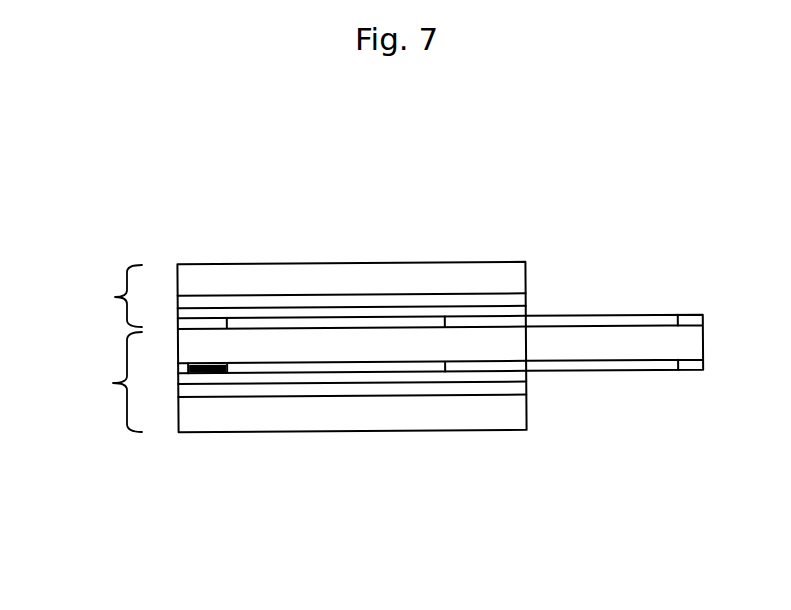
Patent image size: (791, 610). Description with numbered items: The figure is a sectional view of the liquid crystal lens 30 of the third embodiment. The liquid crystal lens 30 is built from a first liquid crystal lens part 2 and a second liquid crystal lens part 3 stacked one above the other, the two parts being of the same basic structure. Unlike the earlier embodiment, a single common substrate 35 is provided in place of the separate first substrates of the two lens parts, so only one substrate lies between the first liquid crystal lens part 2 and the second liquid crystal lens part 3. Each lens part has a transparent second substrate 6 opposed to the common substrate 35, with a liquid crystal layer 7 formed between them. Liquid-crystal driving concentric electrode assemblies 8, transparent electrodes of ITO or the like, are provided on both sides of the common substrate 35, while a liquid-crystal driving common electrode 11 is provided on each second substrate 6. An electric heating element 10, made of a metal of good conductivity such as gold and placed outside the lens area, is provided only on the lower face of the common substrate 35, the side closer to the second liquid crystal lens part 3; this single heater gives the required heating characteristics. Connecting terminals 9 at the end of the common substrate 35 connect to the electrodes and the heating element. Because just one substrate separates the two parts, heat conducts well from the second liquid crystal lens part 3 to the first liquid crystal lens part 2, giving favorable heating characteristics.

The first liquid crystal lens part 2 is at (113, 296).
The second liquid crystal lens part 3 is at (113, 382).
The second substrate 6 is at (481, 281).
The liquid crystal layer 7 is at (291, 312).
The liquid-crystal driving concentric electrode assembly 8 is at (385, 326).
The connecting terminal 9 is at (648, 322).
The electric heating element 10 is at (208, 368).
The liquid-crystal driving common electrode 11 is at (118, 472).
The liquid crystal lens 30 is at (561, 315).
The common substrate 35 is at (582, 345).